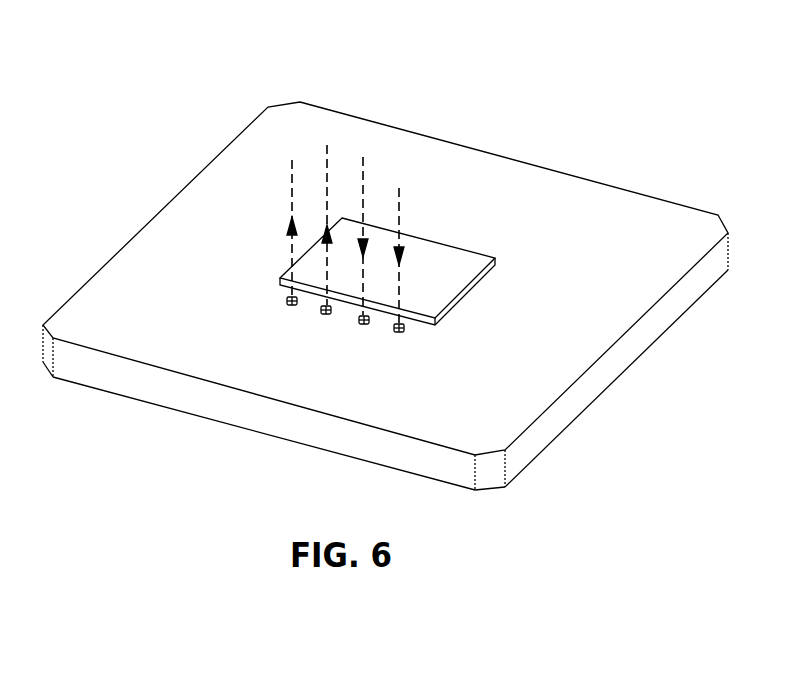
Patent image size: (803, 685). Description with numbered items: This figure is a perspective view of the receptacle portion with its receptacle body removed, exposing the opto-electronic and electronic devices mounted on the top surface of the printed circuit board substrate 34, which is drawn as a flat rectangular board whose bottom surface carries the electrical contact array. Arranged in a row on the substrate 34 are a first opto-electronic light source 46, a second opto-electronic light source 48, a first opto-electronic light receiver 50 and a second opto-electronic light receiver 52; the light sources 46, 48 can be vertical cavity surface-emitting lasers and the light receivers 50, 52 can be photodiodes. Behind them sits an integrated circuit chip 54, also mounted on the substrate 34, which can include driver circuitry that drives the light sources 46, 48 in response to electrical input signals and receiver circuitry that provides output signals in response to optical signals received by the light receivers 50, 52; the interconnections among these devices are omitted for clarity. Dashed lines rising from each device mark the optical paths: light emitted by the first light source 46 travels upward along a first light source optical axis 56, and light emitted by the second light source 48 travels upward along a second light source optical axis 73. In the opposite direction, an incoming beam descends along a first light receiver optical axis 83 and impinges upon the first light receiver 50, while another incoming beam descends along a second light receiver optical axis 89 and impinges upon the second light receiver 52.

The printed circuit board substrate 34 is at (618, 373).
The integrated circuit chip 54 is at (483, 282).
The first opto-electronic light source 46 is at (286, 298).
The second opto-electronic light source 48 is at (325, 316).
The first opto-electronic light receiver 50 is at (364, 326).
The second opto-electronic light receiver 52 is at (400, 334).
The first light source optical axis 56 is at (292, 178).
The second light source optical axis 73 is at (327, 152).
The first light receiver optical axis 83 is at (363, 178).
The second light receiver optical axis 89 is at (399, 205).